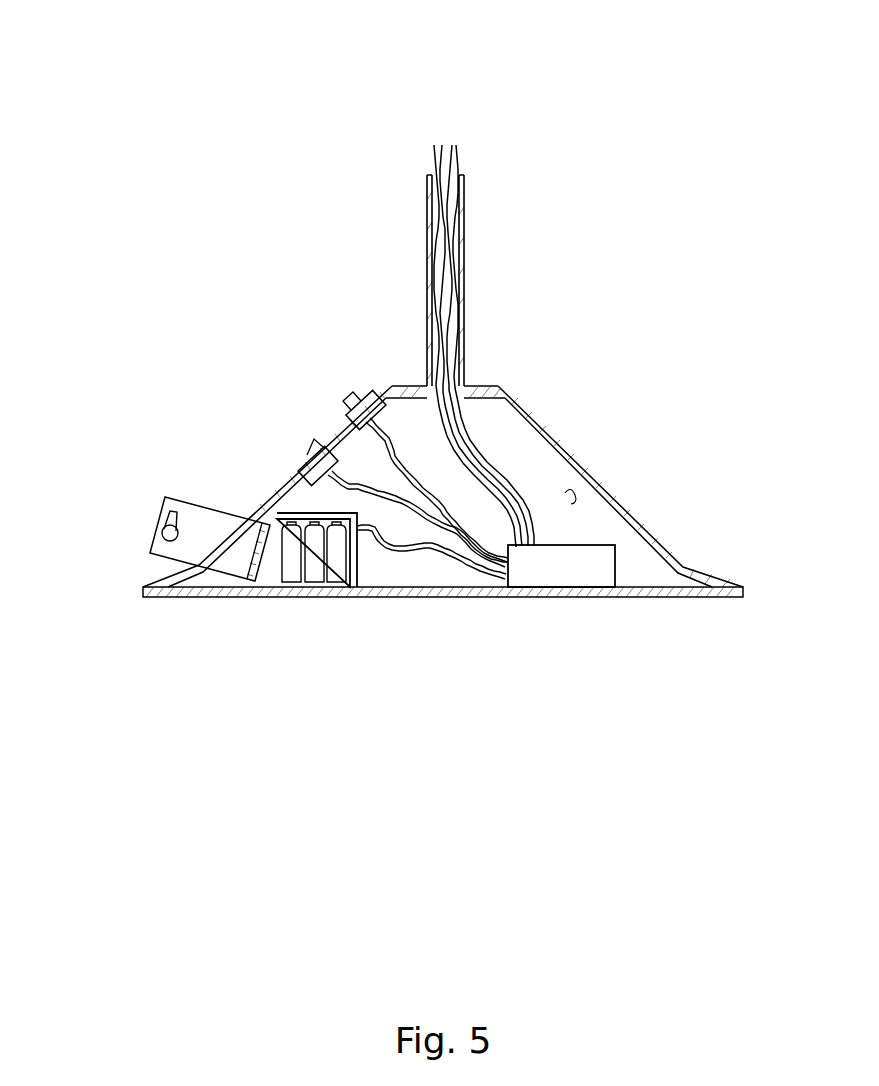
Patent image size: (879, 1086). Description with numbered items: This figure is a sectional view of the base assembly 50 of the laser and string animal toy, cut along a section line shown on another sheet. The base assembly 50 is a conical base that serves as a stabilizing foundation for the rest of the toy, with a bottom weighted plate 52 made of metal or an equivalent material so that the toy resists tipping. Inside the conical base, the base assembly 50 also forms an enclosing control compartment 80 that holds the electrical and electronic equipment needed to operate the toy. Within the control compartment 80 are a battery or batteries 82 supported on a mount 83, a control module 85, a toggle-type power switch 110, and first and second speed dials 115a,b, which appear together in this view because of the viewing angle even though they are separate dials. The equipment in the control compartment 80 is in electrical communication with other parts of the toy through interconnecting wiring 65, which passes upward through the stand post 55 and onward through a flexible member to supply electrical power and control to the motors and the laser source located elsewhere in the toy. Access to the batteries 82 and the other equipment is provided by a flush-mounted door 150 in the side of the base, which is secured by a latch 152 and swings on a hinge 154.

The base assembly 50 is at (701, 156).
The bottom weighted plate 52 is at (343, 598).
The stand post 55 is at (463, 290).
The interconnecting wiring 65 is at (458, 515).
The control compartment 80 is at (508, 543).
The batteries 82 is at (337, 562).
The mount 83 is at (352, 578).
The control module 85 is at (587, 545).
The toggle-type power switch 110 is at (310, 452).
The first and second speed dials 115a,b is at (343, 395).
The flush-mounted door 150 is at (213, 508).
The latch 152 is at (163, 533).
The hinge 154 is at (257, 560).